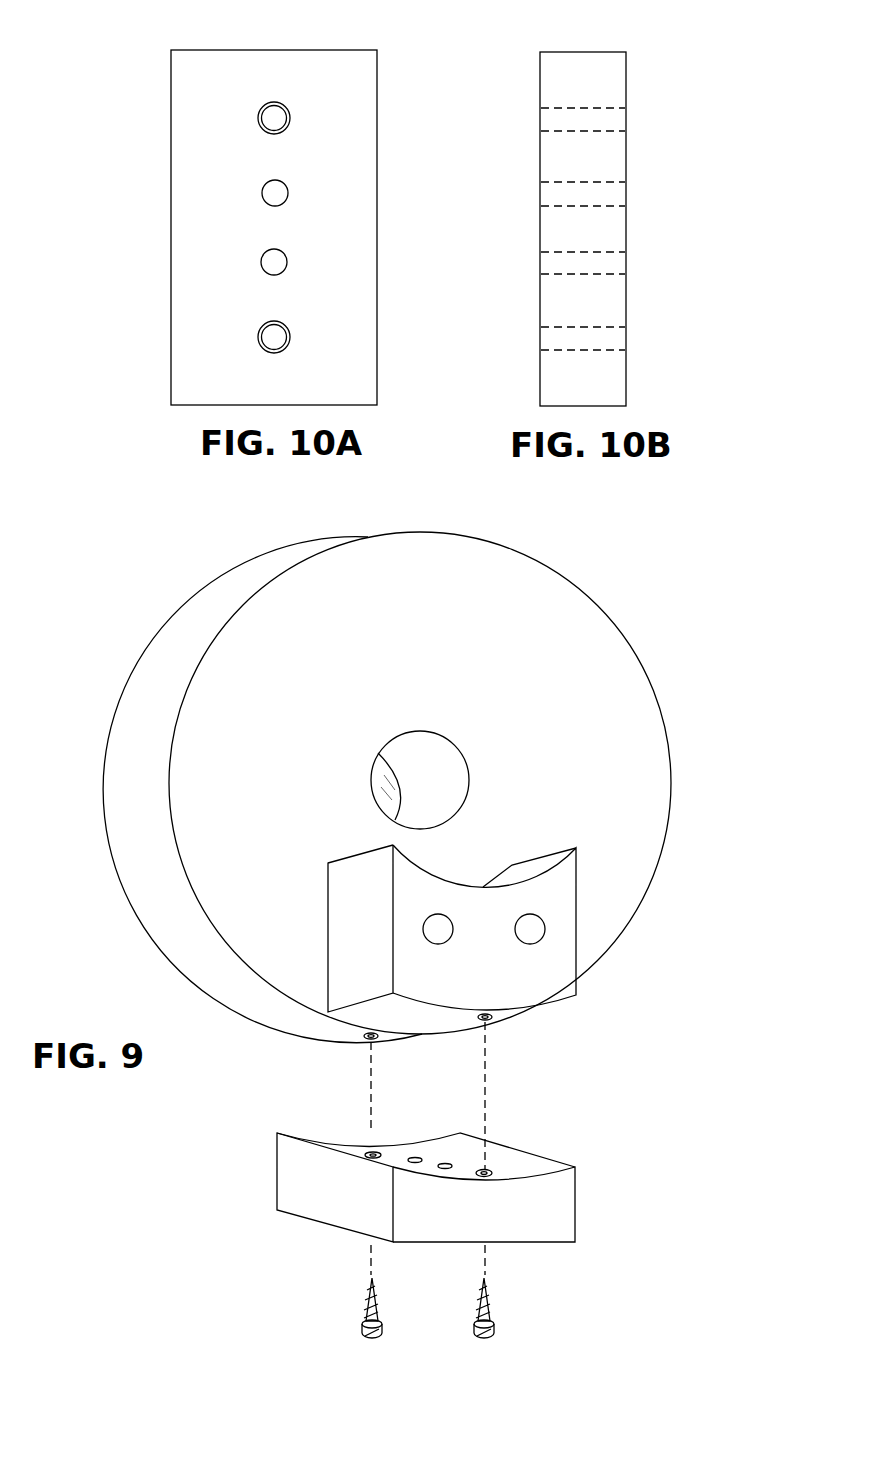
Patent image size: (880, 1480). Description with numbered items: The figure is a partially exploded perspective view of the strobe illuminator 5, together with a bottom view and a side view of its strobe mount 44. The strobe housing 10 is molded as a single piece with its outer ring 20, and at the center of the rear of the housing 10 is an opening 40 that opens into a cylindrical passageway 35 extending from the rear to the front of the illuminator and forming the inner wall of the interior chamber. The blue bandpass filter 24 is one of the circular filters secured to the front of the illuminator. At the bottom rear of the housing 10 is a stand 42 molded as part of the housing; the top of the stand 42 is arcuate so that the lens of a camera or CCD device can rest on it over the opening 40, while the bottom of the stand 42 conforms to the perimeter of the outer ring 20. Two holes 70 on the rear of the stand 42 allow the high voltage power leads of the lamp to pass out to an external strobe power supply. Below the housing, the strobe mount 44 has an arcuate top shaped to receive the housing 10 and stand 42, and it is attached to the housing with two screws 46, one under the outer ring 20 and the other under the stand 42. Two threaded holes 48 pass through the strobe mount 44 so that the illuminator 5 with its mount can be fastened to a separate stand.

In FIG. 9, the strobe illuminator 5 is at (668, 630).
In FIG. 9, the strobe housing 10 is at (162, 632).
In FIG. 9, the outer ring 20 is at (147, 831).
In FIG. 9, the blue bandpass filter 24 is at (380, 768).
In FIG. 9, the cylindrical passageway 35 is at (446, 795).
In FIG. 9, the opening 40 is at (448, 763).
In FIG. 9, the stand 42 is at (470, 997).
In FIG. 10A, the strobe mount 44 is at (207, 60).
In FIG. 10B, the strobe mount 44 is at (561, 60).
In FIG. 9, the strobe mount 44 is at (554, 1226).
In FIG. 10A, the screws 46 is at (258, 116).
In FIG. 10B, the screws 46 is at (615, 127).
In FIG. 9, the screws 46 is at (370, 1152).
In FIG. 10A, the threaded holes 48 is at (263, 190).
In FIG. 10B, the threaded holes 48 is at (615, 195).
In FIG. 9, the threaded holes 48 is at (445, 1163).
In FIG. 9, the holes 70 is at (453, 926).